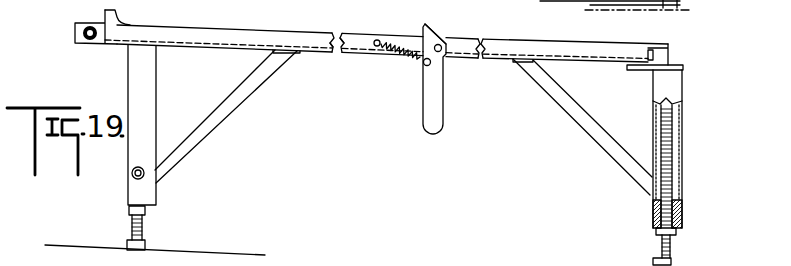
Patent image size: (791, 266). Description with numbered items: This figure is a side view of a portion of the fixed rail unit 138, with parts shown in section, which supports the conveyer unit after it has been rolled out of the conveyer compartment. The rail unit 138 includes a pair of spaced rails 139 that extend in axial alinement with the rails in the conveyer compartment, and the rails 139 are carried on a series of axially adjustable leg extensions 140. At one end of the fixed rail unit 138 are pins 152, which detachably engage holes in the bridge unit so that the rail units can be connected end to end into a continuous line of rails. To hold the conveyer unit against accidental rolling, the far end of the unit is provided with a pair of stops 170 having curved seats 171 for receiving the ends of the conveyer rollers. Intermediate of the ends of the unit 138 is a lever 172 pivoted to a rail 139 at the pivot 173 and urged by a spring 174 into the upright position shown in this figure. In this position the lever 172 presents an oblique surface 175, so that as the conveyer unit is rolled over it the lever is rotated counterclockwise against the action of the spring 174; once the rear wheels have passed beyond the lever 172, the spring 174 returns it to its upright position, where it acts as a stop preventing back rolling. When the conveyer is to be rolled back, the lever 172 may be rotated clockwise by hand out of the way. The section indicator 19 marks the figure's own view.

The section line indicator 19 is at (703, 1).
The rail unit 138 is at (202, 31).
The rails 139 is at (340, 30).
The leg extensions 140 is at (145, 230).
The pins 152 is at (651, 50).
The stops 170 is at (106, 13).
The curved seats 171 is at (120, 19).
The lever 172 is at (444, 104).
The pivot 173 is at (442, 47).
The spring 174 is at (378, 48).
The oblique surface 175 is at (434, 36).